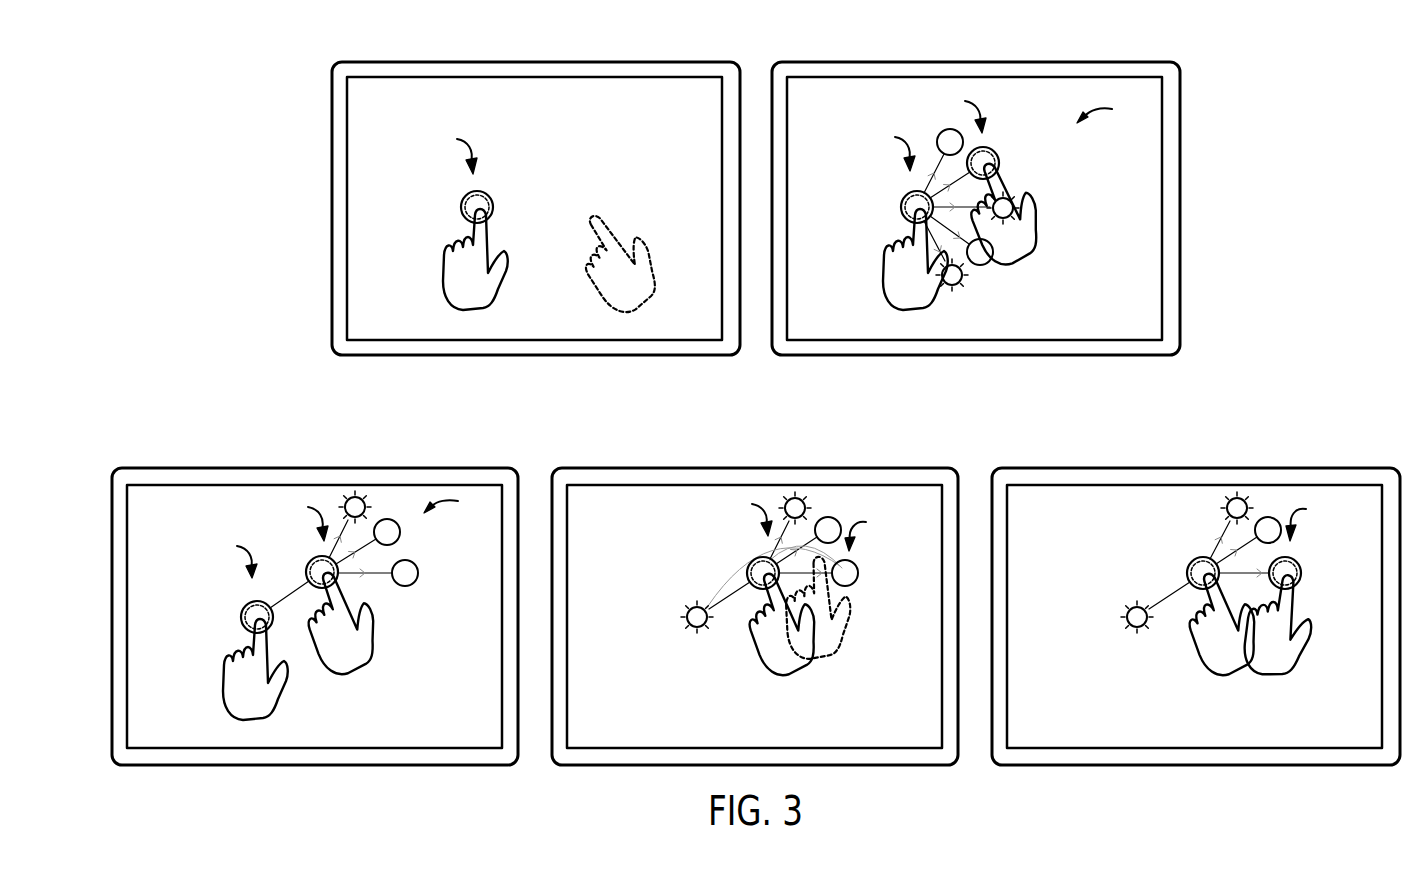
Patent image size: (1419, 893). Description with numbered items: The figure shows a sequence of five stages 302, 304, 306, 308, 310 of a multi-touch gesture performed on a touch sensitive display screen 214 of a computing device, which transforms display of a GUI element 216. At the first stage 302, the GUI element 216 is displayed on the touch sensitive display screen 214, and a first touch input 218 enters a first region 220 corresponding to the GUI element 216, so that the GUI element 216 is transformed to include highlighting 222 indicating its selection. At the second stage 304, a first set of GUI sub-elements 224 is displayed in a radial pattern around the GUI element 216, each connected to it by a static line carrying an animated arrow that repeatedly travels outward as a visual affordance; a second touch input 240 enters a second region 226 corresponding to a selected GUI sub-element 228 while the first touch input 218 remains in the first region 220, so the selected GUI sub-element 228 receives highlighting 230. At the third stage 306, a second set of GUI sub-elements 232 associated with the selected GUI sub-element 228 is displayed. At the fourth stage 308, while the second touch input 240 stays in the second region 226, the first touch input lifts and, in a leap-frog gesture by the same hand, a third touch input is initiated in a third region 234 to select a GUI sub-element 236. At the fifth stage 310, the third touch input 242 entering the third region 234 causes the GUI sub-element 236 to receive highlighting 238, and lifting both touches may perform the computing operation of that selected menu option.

The first stage of gesture sequence 302 is at (640, 61).
The second stage of gesture sequence 304 is at (1080, 61).
The third stage of gesture sequence 306 is at (420, 468).
The fourth stage of gesture sequence 308 is at (860, 468).
The fifth stage of gesture sequence 310 is at (1300, 468).
The touch sensitive display screen 214 is at (703, 333).
The GUI element 216 is at (468, 198).
The first touch input 218 is at (445, 283).
The first region 220 is at (558, 354).
The highlighting 222 is at (492, 198).
The first set of GUI sub-elements 224 is at (1112, 111).
The second region 226 is at (629, 316).
The selected GUI sub-element 228 is at (988, 150).
The highlighting 230 is at (1000, 163).
The second set of GUI sub-elements 232 is at (458, 503).
The third region 234 is at (1093, 525).
The GUI sub-element 236 is at (850, 563).
The highlighting 238 is at (1302, 577).
The second touch input 240 is at (1043, 230).
The third touch input 242 is at (1300, 657).